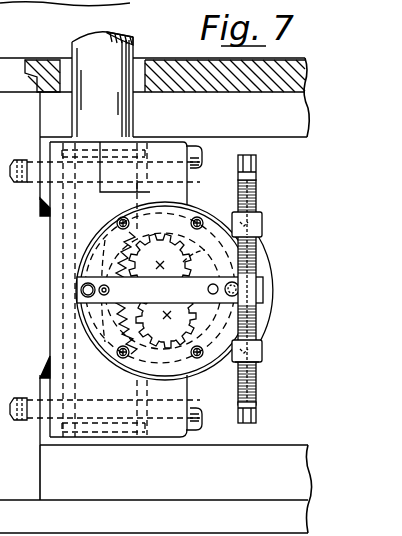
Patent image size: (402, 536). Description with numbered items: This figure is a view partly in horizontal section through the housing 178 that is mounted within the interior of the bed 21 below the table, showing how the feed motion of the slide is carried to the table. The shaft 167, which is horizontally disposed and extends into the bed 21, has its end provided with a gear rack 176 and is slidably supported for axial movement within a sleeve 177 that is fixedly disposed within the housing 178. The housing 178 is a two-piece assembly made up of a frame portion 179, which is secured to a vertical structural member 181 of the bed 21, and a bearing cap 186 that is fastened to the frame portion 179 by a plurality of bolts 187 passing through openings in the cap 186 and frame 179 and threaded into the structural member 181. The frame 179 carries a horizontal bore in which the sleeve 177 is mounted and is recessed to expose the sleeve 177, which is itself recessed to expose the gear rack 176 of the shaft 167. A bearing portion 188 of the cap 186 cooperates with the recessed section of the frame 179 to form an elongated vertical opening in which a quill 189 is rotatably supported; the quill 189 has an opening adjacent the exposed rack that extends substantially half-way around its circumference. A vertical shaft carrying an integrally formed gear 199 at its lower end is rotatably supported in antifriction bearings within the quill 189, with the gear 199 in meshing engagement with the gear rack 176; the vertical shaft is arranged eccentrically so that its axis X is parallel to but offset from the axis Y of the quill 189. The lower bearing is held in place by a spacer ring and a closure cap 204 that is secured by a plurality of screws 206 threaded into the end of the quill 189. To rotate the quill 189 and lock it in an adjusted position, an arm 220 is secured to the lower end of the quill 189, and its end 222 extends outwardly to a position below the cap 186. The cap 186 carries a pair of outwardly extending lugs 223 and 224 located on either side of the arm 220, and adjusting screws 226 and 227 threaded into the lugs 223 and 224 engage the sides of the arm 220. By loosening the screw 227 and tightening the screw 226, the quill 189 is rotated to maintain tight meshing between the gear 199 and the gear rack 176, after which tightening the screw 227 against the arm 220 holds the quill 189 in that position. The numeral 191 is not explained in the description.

The bed 21 is at (290, 80).
The shaft 167 is at (90, 50).
The gear rack 176 is at (132, 258).
The sleeve 177 is at (70, 228).
The housing 178 is at (263, 204).
The frame portion 179 is at (52, 263).
The vertical structural member 181 is at (100, 316).
The bearing cap 186 is at (262, 252).
The bolts 187 is at (197, 150).
The bearing portion 188 is at (182, 215).
The quill 189 is at (263, 346).
The gear 191 is at (142, 328).
The gear 199 is at (190, 263).
The closure cap 204 is at (112, 331).
The screws 206 is at (128, 224).
The arm 220 is at (265, 286).
The end of arm 222 is at (262, 300).
The lug 223 is at (262, 361).
The lug 224 is at (262, 219).
The adjusting screw 226 is at (257, 405).
The adjusting screw 227 is at (257, 180).